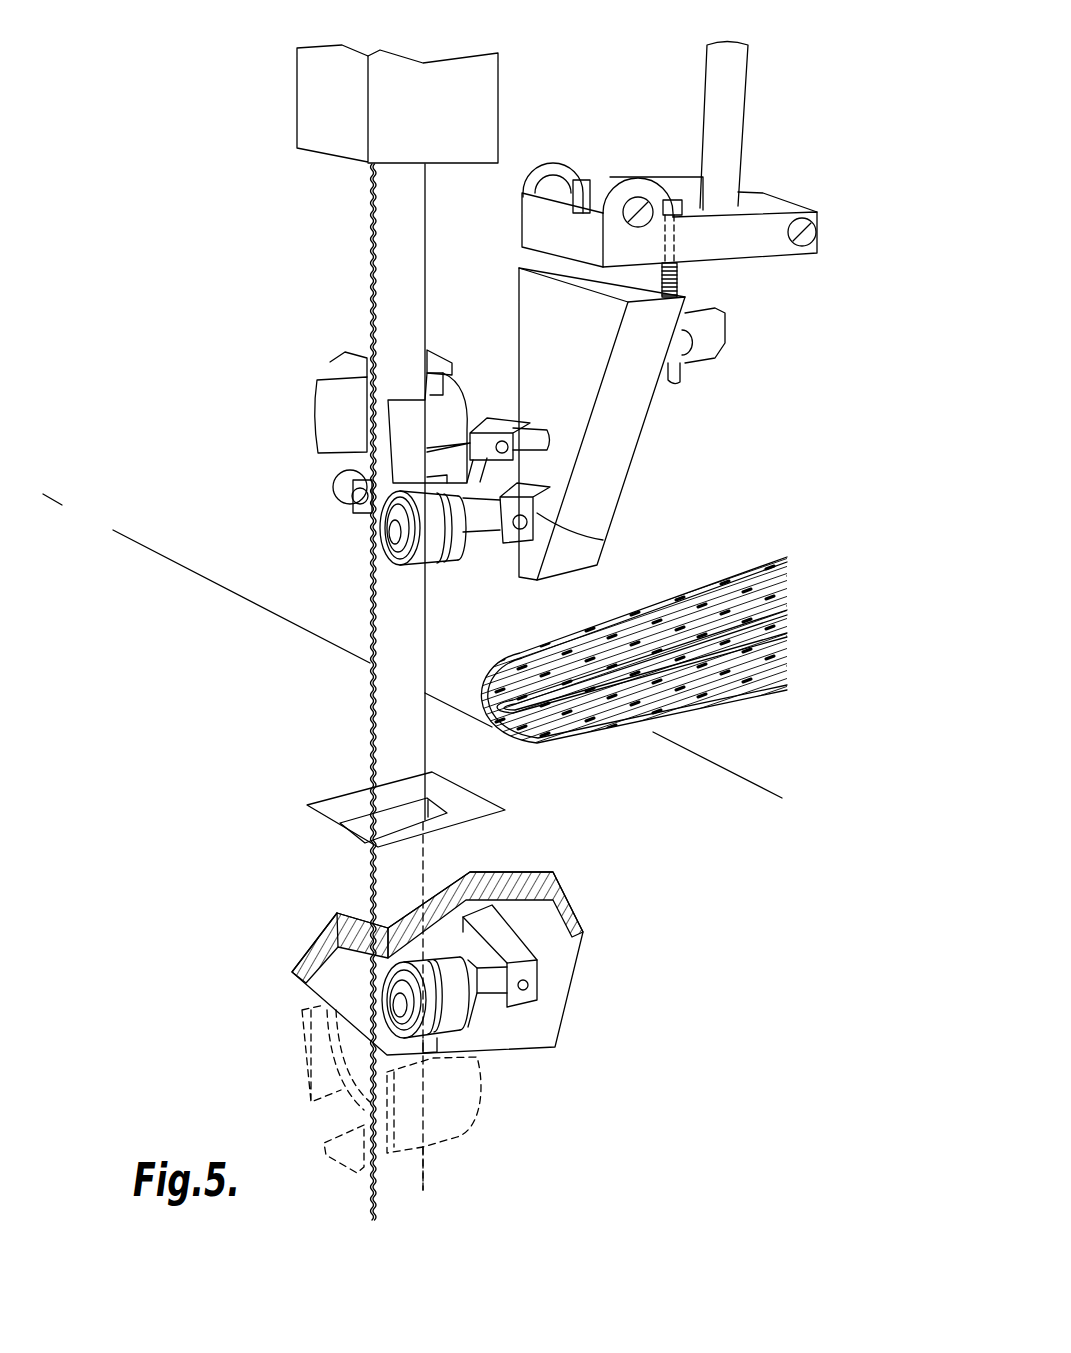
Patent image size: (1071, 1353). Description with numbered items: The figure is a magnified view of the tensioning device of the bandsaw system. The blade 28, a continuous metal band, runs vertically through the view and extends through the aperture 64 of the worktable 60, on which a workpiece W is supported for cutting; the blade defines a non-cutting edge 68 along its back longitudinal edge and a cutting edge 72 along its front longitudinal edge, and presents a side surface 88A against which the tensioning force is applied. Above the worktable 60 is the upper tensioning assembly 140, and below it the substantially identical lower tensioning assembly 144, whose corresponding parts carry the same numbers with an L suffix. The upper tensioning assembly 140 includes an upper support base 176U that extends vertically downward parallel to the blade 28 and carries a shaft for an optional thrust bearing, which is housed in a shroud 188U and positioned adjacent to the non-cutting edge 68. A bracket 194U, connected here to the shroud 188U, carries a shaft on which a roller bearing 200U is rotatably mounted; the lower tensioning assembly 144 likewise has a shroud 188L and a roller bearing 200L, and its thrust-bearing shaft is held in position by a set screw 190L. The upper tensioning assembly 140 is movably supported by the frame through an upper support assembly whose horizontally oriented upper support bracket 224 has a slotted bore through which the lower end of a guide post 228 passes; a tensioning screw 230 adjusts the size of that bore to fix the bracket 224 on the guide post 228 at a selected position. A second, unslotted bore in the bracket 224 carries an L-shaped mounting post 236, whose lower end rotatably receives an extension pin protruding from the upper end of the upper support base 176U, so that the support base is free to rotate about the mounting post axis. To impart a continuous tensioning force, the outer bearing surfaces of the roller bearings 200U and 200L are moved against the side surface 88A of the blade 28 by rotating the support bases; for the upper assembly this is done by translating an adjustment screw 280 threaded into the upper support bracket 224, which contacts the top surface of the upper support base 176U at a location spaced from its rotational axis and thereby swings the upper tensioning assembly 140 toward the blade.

The blade 28 is at (369, 242).
The non-cutting edge 68 is at (430, 630).
The side surface 88A is at (416, 672).
The guide post 228 is at (738, 90).
The upper support bracket 224 is at (760, 243).
The L-shaped mounting post 236 is at (670, 190).
The tensioning screw 230 is at (812, 245).
The adjustment screw 280 is at (688, 285).
The upper support base 176U is at (638, 433).
The bracket 194U is at (603, 542).
The upper tensioning assembly 140 is at (492, 362).
The shroud 188U is at (318, 412).
The cutting edge 72 is at (368, 578).
The roller bearing 200U is at (470, 560).
The aperture 64 is at (440, 806).
The workpiece W is at (590, 748).
The worktable 60 is at (633, 869).
The lower tensioning assembly 144 is at (527, 1030).
The set screw 190L is at (500, 948).
The roller bearing 200L is at (486, 1037).
The shroud 188L is at (302, 1055).